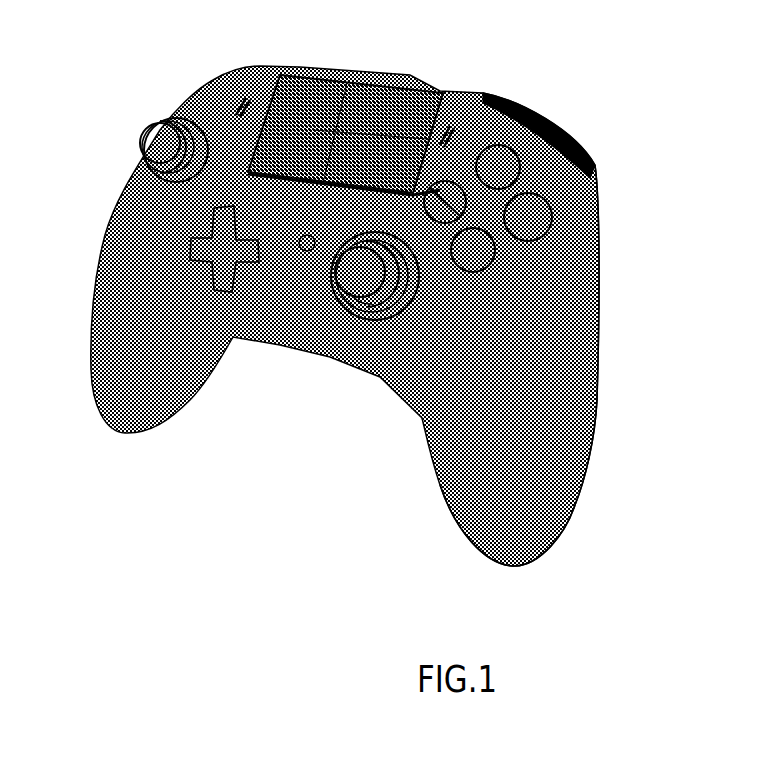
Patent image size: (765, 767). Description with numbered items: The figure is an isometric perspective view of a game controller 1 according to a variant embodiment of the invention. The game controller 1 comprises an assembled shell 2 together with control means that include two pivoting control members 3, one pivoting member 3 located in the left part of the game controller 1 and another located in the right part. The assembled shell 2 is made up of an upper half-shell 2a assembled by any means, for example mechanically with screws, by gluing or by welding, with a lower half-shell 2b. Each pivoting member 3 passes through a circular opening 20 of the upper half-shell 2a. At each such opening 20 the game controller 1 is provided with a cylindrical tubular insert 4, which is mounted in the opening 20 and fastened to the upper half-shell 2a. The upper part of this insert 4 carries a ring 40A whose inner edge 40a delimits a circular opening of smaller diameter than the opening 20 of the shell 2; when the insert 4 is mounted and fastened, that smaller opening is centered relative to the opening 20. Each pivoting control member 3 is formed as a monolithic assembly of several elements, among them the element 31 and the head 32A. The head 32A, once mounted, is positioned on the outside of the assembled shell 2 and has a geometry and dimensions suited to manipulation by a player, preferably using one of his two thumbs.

The game controller 1 is at (392, 316).
The assembled shell 2 is at (379, 316).
The upper half-shell 2a is at (577, 490).
The lower half-shell 2b is at (593, 448).
The pivoting control member 3 is at (207, 237).
The cylindrical tubular insert 4 is at (155, 190).
The opening 20 is at (346, 264).
The element of the pivoting control member 31 is at (415, 283).
The head 32A is at (143, 148).
The ring 40A is at (332, 292).
The inner edge 40a is at (355, 330).